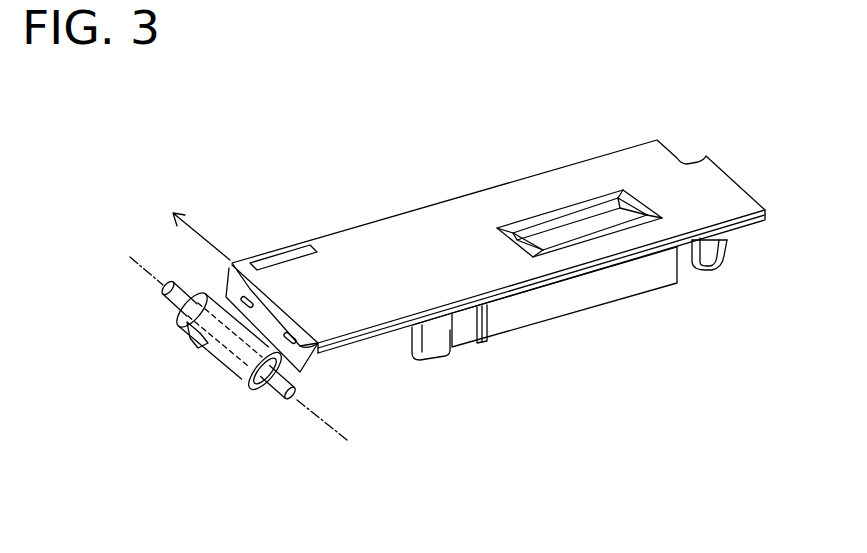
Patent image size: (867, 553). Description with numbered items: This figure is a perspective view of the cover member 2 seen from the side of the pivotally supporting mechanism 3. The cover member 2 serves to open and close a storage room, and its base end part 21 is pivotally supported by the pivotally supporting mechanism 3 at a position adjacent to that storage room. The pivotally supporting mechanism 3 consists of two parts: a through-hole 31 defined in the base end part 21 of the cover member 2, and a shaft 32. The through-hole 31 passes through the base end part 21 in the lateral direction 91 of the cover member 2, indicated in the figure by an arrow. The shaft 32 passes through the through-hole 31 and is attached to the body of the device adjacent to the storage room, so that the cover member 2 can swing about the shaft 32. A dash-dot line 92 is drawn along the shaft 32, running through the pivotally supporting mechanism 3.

The cover member 2 is at (527, 194).
The base end part 21 is at (302, 374).
The pivotally supporting mechanism 3 is at (228, 372).
The through-hole 31 is at (253, 390).
The shaft 32 is at (270, 392).
The lateral direction 91 is at (205, 243).
The rotation axis 92 is at (316, 422).